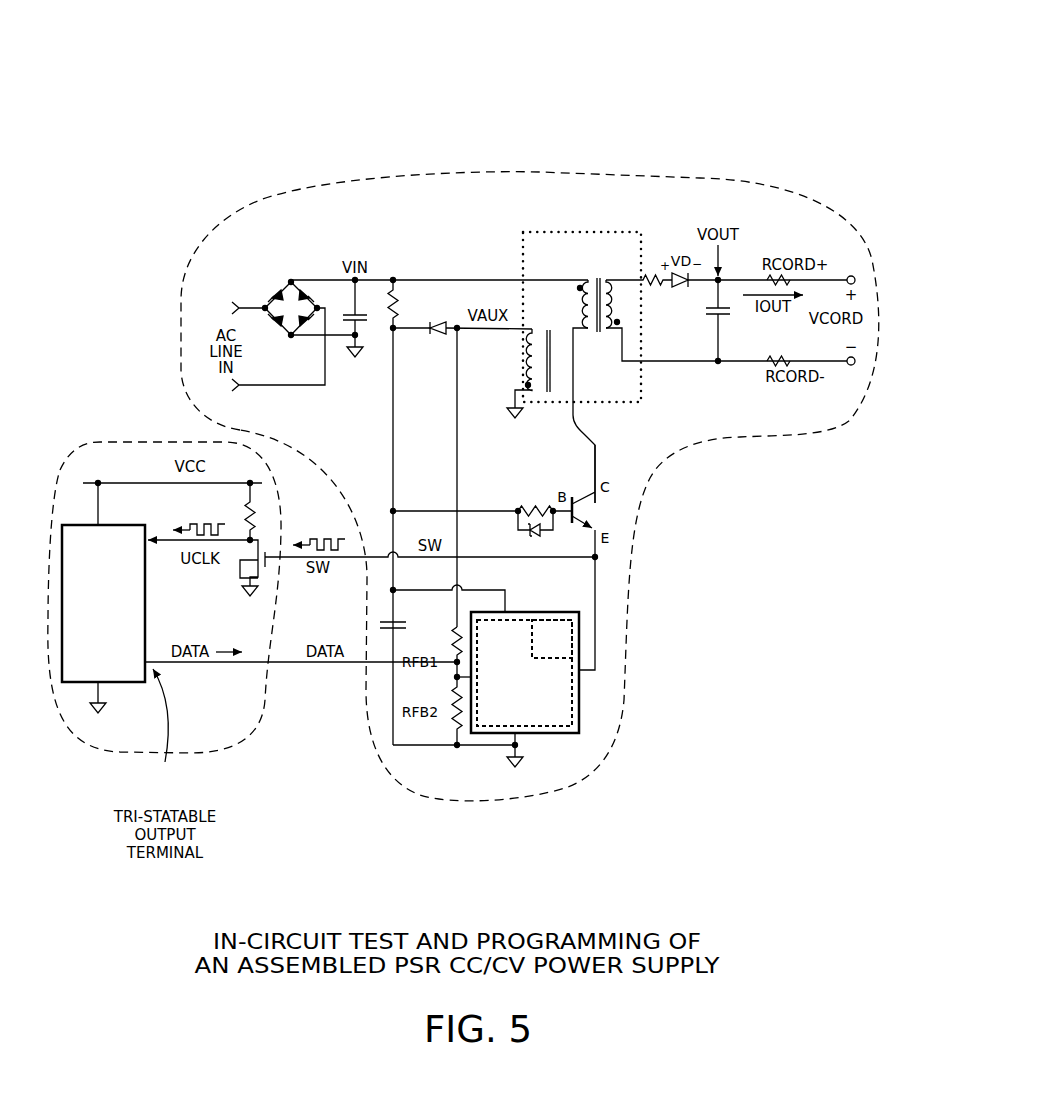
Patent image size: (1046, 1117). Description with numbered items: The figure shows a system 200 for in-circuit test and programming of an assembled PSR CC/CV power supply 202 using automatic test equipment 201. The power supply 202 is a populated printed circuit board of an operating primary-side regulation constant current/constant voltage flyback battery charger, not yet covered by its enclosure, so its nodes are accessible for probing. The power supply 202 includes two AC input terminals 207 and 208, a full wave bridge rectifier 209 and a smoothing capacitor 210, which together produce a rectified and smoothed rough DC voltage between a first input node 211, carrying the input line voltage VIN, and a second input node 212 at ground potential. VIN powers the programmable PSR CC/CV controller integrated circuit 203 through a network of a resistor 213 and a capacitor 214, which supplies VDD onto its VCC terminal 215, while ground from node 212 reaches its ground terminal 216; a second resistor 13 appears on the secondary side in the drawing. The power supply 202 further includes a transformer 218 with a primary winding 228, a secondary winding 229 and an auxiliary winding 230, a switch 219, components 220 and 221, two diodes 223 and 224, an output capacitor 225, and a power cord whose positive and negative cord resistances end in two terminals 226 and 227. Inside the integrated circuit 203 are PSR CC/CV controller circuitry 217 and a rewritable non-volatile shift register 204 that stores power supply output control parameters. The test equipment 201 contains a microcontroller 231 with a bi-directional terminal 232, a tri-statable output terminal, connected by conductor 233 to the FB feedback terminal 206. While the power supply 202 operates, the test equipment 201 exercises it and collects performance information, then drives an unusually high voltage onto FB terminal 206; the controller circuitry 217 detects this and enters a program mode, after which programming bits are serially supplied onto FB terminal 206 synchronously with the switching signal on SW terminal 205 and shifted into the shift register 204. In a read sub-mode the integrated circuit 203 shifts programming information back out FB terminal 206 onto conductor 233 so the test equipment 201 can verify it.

The system 200 is at (356, 88).
The automatic test equipment 201 is at (113, 414).
The power supply 202 is at (641, 155).
The PSR CC/CV controller integrated circuit 203 is at (661, 670).
The non-volatile shift register 204 is at (558, 632).
The SW terminal 205 is at (582, 688).
The FB feedback terminal 206 is at (463, 678).
The AC input terminal 207 is at (239, 306).
The AC input terminal 208 is at (238, 390).
The full wave bridge rectifier 209 is at (291, 309).
The smoothing capacitor 210 is at (339, 313).
The first input node 211 is at (379, 278).
The second input node 212 is at (367, 318).
The resistor 213 is at (403, 303).
The output resistor 13 is at (651, 299).
The capacitor 214 is at (404, 619).
The VCC terminal 215 is at (509, 611).
The ground terminal 216 is at (520, 752).
The PSR CC/CV controller circuitry 217 is at (552, 697).
The transformer 218 is at (548, 232).
The switch 219 is at (598, 506).
The component 220 is at (535, 508).
The component 221 is at (528, 533).
The diode 223 is at (438, 331).
The diode 224 is at (684, 291).
The output capacitor 225 is at (712, 328).
The terminal 226 is at (851, 276).
The terminal 227 is at (851, 366).
The primary winding 228 is at (575, 291).
The secondary winding 229 is at (622, 318).
The auxiliary winding 230 is at (525, 351).
The microcontroller 231 is at (103, 619).
The microcontroller terminal 232 is at (150, 660).
The conductor 233 is at (322, 667).